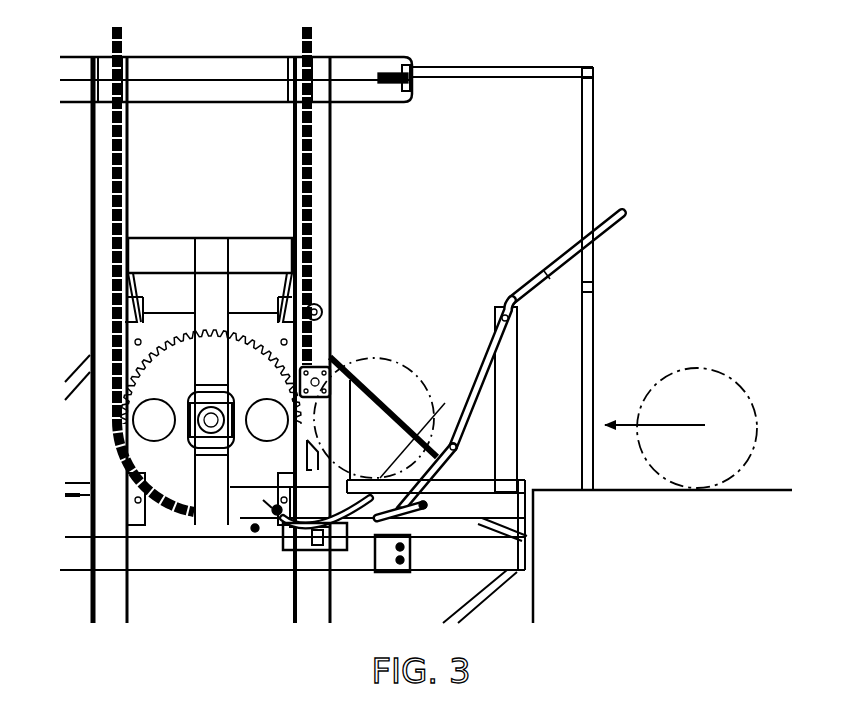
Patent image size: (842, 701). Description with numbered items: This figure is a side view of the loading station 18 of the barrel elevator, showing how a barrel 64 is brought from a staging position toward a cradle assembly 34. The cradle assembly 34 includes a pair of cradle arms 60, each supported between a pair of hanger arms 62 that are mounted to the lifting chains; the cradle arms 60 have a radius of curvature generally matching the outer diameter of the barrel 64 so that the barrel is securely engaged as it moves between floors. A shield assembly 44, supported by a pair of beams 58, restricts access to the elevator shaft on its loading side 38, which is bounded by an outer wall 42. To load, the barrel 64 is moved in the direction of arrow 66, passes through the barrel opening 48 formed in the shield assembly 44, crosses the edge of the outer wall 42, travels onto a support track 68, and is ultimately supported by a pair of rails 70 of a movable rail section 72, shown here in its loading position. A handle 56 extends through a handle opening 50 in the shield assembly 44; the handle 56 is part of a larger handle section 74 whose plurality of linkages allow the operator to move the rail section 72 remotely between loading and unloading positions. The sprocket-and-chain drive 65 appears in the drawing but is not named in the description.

The loading station 18 is at (662, 212).
The cradle assembly 34 is at (340, 352).
The loading side 38 is at (310, 167).
The outer wall 42 is at (533, 585).
The shield assembly 44 is at (607, 118).
The barrel opening 48 is at (595, 363).
The handle opening 50 is at (585, 173).
The handle 56 is at (557, 267).
The beam 58 is at (496, 75).
The cradle arm 60 is at (363, 537).
The hanger arm 62 is at (398, 365).
The barrel 64 is at (725, 373).
The sprocket and chain 65 is at (152, 455).
The arrow 66 is at (668, 425).
The support track 68 is at (470, 477).
The rail 70 is at (360, 477).
The rail section 72 is at (290, 530).
The handle section 74 is at (502, 300).